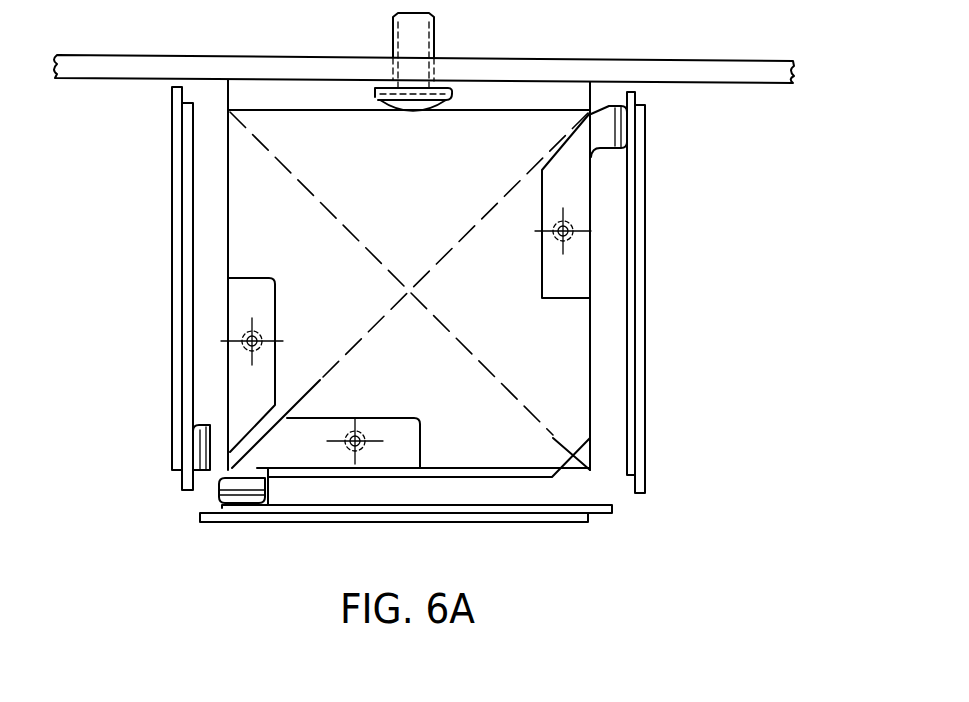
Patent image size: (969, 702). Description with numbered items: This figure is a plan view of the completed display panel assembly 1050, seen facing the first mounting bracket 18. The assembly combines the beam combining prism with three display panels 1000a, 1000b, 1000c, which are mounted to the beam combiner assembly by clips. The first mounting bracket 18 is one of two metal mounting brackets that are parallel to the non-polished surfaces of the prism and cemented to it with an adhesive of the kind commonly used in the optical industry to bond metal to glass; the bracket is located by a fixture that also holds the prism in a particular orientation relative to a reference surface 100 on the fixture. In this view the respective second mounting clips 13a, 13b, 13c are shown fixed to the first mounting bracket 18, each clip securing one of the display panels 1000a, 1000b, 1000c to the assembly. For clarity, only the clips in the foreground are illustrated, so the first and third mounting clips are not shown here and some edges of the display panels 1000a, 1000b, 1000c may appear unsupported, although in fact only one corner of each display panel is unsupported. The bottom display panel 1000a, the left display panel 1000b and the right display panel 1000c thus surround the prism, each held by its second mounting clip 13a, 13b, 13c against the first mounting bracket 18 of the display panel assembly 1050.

The first mounting bracket 18 is at (503, 100).
The reference surface 100 is at (705, 68).
The display panel assembly 1050 is at (678, 425).
The display panel 1000a is at (547, 523).
The display panel 1000b is at (172, 283).
The display panel 1000c is at (645, 245).
The second mounting clip 13a is at (220, 478).
The second mounting clip 13b is at (213, 427).
The second mounting clip 13c is at (606, 150).